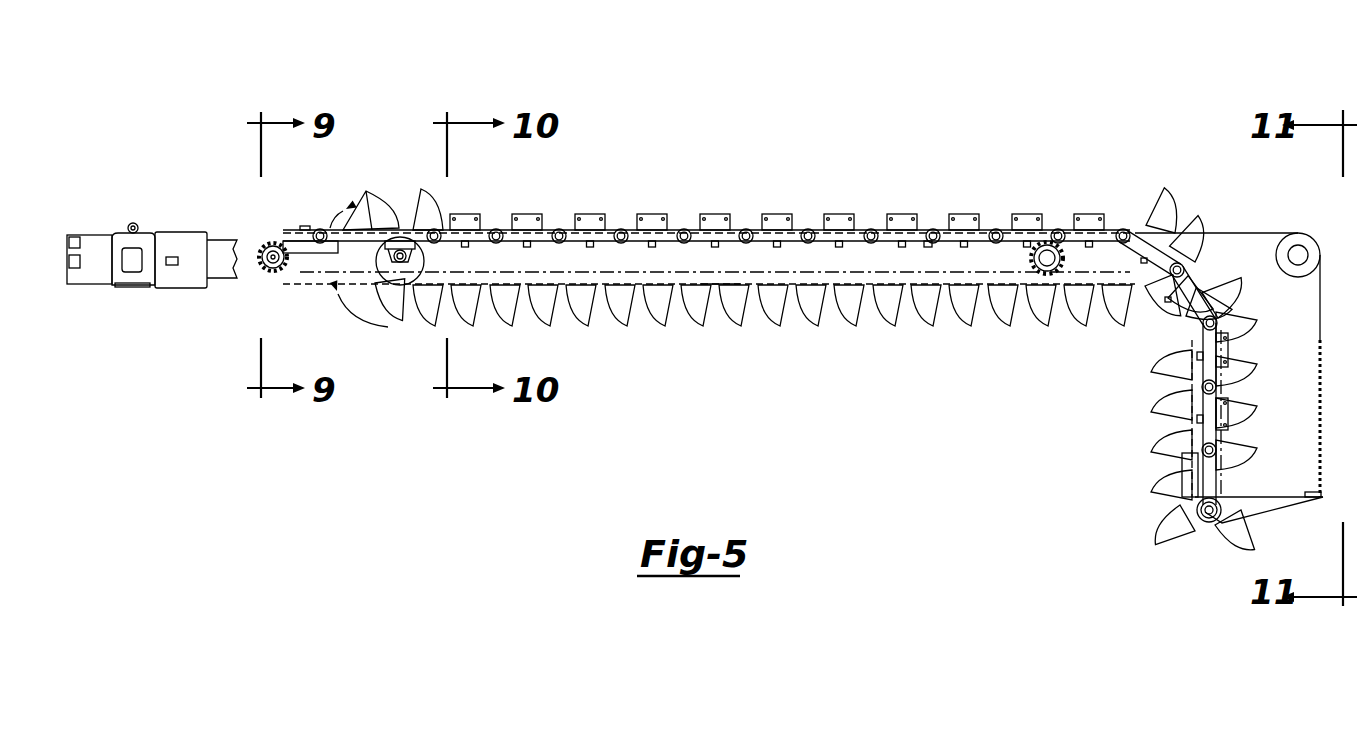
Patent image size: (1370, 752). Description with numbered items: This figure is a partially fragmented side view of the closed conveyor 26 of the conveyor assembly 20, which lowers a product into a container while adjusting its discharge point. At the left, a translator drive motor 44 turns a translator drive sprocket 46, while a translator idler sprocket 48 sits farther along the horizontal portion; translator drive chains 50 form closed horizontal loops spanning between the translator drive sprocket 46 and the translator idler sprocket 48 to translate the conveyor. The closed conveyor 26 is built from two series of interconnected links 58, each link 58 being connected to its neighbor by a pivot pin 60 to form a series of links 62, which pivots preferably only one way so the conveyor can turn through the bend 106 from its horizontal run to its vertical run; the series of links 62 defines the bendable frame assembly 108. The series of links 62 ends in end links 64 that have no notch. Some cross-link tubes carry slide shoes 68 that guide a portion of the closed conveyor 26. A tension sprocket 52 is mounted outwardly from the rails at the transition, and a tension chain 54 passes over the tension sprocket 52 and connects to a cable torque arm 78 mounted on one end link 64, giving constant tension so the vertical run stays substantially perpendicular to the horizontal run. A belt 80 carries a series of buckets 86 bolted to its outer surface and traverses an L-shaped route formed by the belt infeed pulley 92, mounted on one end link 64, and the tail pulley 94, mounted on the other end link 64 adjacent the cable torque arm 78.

The conveyor assembly 20 is at (962, 456).
The closed conveyor 26 is at (746, 226).
The translator drive motor 44 is at (190, 237).
The translator drive sprocket 46 is at (273, 271).
The translator idler sprocket 48 is at (1047, 250).
The translator drive chain 50 is at (318, 274).
The tension sprocket 52 is at (1298, 236).
The tension chain 54 is at (1237, 233).
The link 58 is at (571, 230).
The pivot pin 60 is at (684, 230).
The series of links 62 is at (928, 224).
The end link 64 is at (405, 240).
The slide shoe 68 is at (462, 214).
The cable torque arm 78 is at (1266, 510).
The belt 80 is at (718, 284).
The bucket 86 is at (597, 326).
The belt infeed pulley 92 is at (428, 258).
The tail pulley 94 is at (1209, 523).
The bend 106 is at (1127, 160).
The bendable frame assembly 108 is at (762, 100).